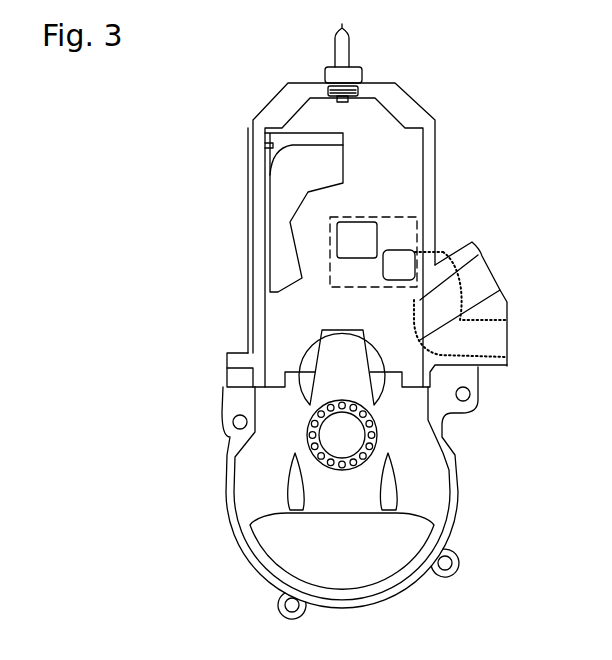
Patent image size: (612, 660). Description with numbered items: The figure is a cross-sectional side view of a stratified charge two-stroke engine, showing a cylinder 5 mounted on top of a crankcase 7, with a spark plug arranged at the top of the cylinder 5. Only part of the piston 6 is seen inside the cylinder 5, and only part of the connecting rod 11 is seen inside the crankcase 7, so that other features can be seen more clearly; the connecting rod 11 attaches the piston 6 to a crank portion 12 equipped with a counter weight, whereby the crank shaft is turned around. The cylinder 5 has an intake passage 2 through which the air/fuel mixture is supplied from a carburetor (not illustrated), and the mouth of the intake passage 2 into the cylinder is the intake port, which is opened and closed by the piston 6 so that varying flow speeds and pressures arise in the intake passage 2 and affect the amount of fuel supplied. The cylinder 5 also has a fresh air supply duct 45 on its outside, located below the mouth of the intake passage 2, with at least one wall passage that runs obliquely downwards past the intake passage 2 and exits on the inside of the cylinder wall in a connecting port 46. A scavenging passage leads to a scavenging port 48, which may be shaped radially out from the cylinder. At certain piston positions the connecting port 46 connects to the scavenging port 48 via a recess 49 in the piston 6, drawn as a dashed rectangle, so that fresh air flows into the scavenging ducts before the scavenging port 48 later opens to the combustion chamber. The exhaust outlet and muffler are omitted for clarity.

The intake passage 2 is at (478, 248).
The cylinder 5 is at (439, 150).
The piston 6 is at (292, 175).
The crankcase 7 is at (422, 492).
The connecting rod 11 is at (257, 382).
The crank portion 12 is at (354, 569).
The fresh air supply duct 45 is at (508, 337).
The connecting port 46 is at (397, 249).
The scavenging port 48 is at (353, 218).
The recess 49 is at (363, 290).